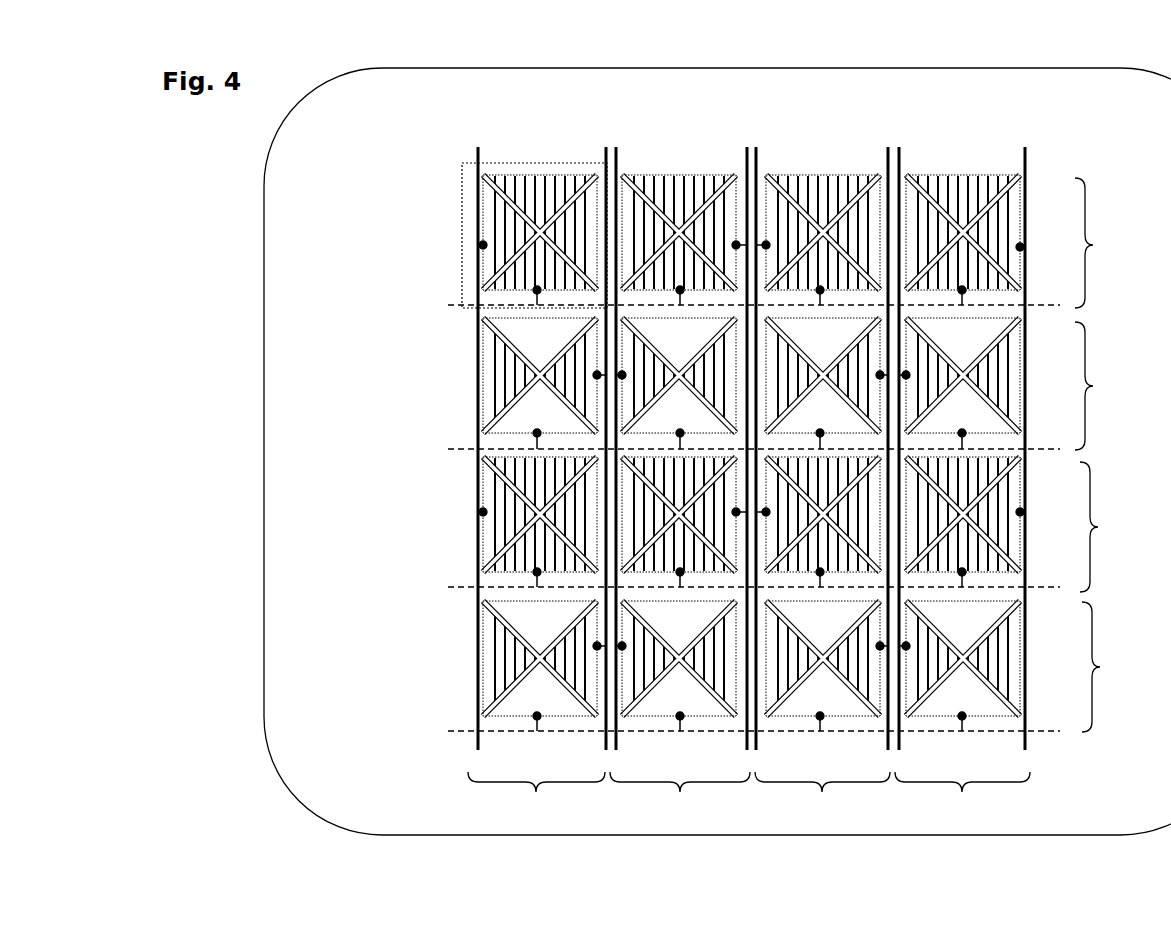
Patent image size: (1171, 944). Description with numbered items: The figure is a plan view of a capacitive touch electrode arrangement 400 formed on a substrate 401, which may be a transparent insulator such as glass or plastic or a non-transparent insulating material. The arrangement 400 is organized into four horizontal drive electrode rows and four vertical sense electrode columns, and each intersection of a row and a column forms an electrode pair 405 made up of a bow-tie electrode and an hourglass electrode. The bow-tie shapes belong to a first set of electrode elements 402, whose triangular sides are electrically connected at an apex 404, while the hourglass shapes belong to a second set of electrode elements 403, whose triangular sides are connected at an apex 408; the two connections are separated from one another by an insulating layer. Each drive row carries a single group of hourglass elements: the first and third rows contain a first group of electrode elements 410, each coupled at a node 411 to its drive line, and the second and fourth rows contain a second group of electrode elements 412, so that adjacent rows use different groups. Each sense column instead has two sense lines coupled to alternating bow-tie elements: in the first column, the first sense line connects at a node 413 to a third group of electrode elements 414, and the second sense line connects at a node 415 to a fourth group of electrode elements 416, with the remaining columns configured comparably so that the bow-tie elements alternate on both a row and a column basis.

The capacitive touch electrode arrangement 400 is at (362, 316).
The substrate 401 is at (1170, 146).
The first set of electrode elements 402 is at (540, 232).
The second set of electrode elements 403 is at (528, 178).
The apex 404 is at (493, 215).
The electrode pair 405 is at (586, 163).
The apex 408 is at (540, 383).
The first group of electrode elements 410 is at (989, 381).
The node 411 is at (968, 282).
The second group of electrode elements 412 is at (959, 524).
The node 413 is at (470, 253).
The third group of electrode elements 414 is at (476, 358).
The node 415 is at (590, 355).
The fourth group of electrode elements 416 is at (474, 524).